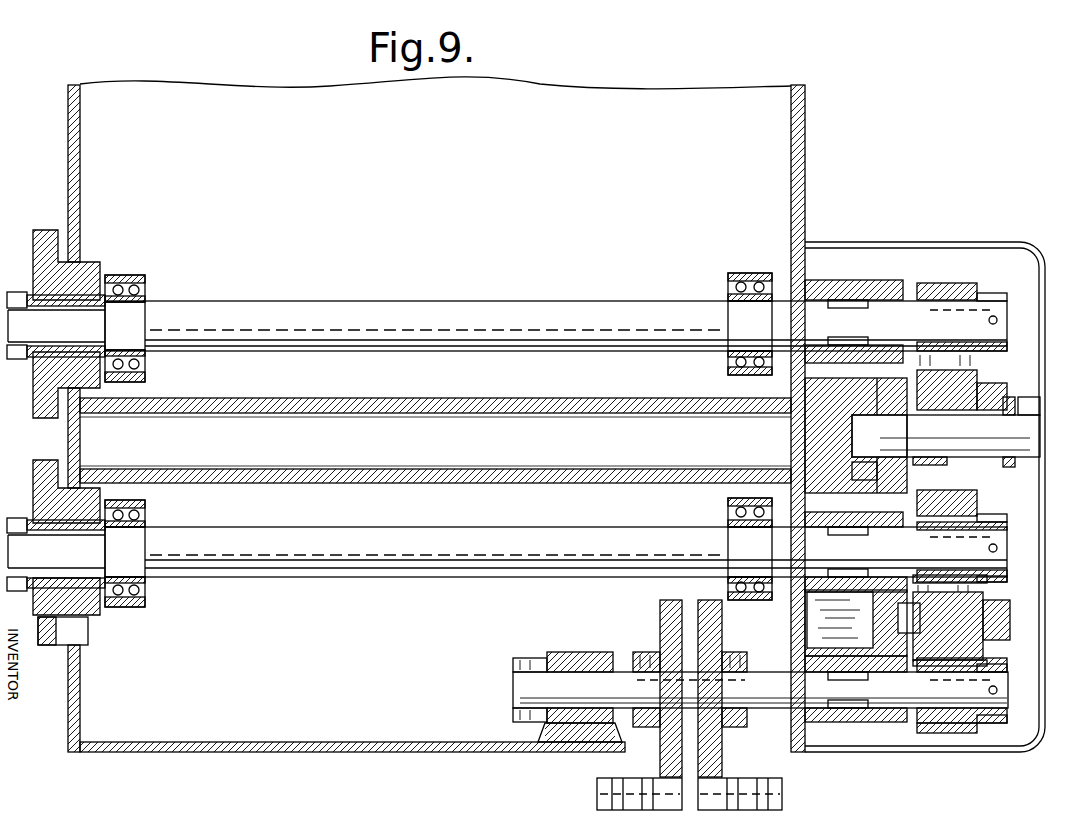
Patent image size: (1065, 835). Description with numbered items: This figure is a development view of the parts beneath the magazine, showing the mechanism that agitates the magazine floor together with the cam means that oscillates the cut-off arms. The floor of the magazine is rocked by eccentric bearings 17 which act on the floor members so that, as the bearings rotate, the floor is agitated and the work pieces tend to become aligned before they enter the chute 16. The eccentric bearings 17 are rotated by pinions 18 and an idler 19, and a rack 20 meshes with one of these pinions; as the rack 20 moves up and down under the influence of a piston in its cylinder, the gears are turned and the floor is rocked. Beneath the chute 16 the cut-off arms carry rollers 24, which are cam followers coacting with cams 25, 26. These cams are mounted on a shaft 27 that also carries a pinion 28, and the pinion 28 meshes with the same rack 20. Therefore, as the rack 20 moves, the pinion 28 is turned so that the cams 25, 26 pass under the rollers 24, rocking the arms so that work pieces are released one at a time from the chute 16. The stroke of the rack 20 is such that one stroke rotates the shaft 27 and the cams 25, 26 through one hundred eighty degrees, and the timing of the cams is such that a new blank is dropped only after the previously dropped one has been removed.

The chute 16 is at (393, 411).
The eccentric bearings 17 is at (146, 372).
The pinions 18 is at (986, 292).
The idler 19 is at (1004, 396).
The rack 20 is at (975, 606).
The rollers 24 is at (657, 776).
The cam 25 is at (668, 622).
The cam 26 is at (722, 640).
The shaft 27 is at (786, 710).
The pinion 28 is at (958, 734).